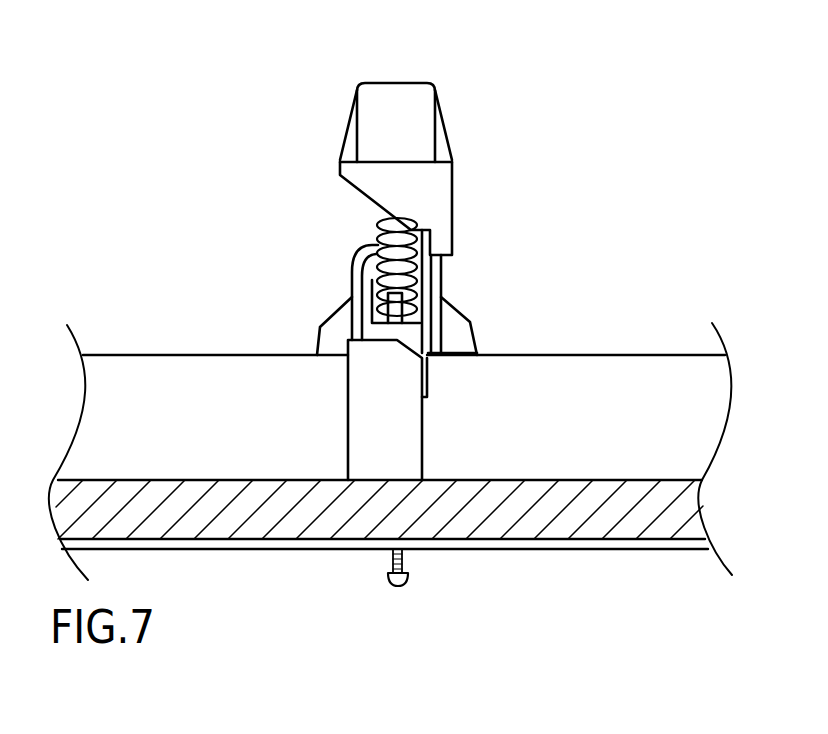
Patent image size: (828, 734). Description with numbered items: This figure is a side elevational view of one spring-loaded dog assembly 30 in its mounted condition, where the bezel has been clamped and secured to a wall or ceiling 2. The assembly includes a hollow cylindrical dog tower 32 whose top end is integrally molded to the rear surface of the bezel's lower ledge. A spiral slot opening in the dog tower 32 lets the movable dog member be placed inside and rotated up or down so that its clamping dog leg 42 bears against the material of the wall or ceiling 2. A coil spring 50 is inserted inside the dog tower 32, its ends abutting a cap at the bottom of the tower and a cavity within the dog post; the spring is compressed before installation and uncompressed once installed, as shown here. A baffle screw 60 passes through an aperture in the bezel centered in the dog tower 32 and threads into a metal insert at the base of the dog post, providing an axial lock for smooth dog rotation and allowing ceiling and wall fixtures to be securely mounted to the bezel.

The wall or ceiling 2 is at (592, 527).
The spring-loaded dog assembly 30 is at (462, 104).
The hollow cylindrical dog tower 32 is at (443, 187).
The clamping dog leg 42 is at (410, 438).
The coil spring 50 is at (377, 233).
The baffle screw 60 is at (405, 563).